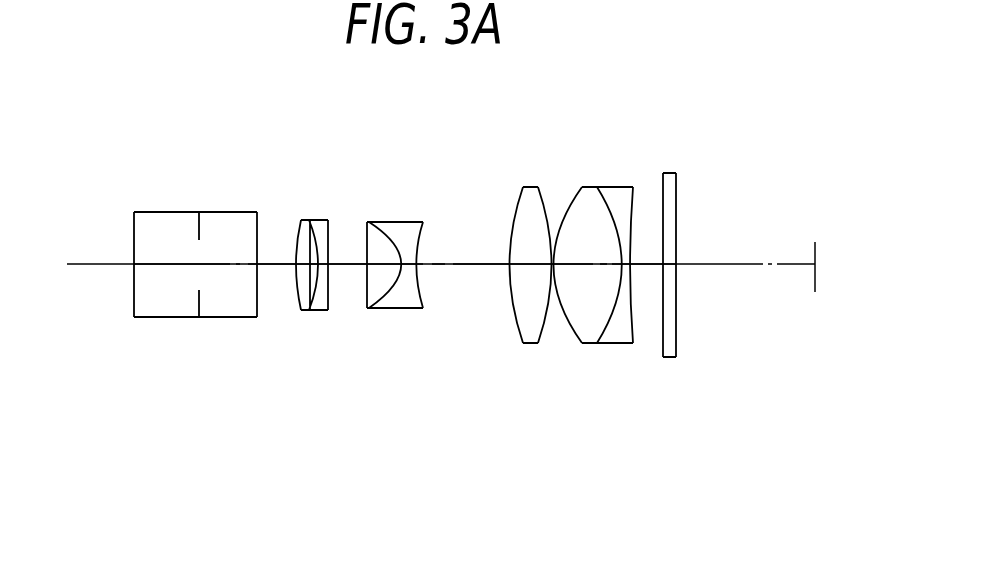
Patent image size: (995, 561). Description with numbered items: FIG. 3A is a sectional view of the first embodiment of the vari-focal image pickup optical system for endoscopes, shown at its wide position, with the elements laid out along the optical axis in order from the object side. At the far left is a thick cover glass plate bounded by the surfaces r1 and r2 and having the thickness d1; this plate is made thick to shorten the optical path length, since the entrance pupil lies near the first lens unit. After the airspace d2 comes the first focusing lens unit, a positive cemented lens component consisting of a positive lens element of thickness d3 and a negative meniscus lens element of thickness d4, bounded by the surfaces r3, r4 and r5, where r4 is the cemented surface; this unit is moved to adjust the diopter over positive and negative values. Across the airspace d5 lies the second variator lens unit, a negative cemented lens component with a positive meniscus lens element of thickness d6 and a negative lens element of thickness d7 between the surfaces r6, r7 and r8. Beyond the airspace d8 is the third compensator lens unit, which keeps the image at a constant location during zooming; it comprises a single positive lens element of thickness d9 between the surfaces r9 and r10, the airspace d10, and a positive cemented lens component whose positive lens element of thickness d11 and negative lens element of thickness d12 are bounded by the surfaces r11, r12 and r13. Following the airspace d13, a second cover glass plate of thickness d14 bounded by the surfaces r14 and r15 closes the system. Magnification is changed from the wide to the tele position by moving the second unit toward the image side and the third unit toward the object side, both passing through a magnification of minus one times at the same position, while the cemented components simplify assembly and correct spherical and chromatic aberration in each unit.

The radius of curvature r1 is at (134, 229).
The radius of curvature r2 is at (257, 232).
The radius of curvature r3 is at (300, 230).
The radius of curvature r4 is at (313, 222).
The radius of curvature r5 is at (328, 240).
The radius of curvature r6 is at (367, 238).
The radius of curvature r7 is at (395, 222).
The radius of curvature r8 is at (417, 238).
The radius of curvature r9 is at (519, 207).
The radius of curvature r10 is at (548, 203).
The radius of curvature r11 is at (571, 195).
The radius of curvature r12 is at (608, 193).
The radius of curvature r13 is at (632, 206).
The radius of curvature r14 is at (663, 175).
The radius of curvature r15 is at (677, 189).
The thickness d1 is at (175, 265).
The airspace d2 is at (275, 265).
The thickness d3 is at (307, 266).
The thickness d4 is at (322, 266).
The airspace d5 is at (350, 266).
The thickness d6 is at (385, 266).
The thickness d7 is at (405, 266).
The airspace d8 is at (468, 266).
The thickness d9 is at (532, 266).
The airspace d10 is at (552, 266).
The thickness d11 is at (587, 266).
The thickness d12 is at (624, 266).
The airspace d13 is at (648, 266).
The thickness d14 is at (668, 268).